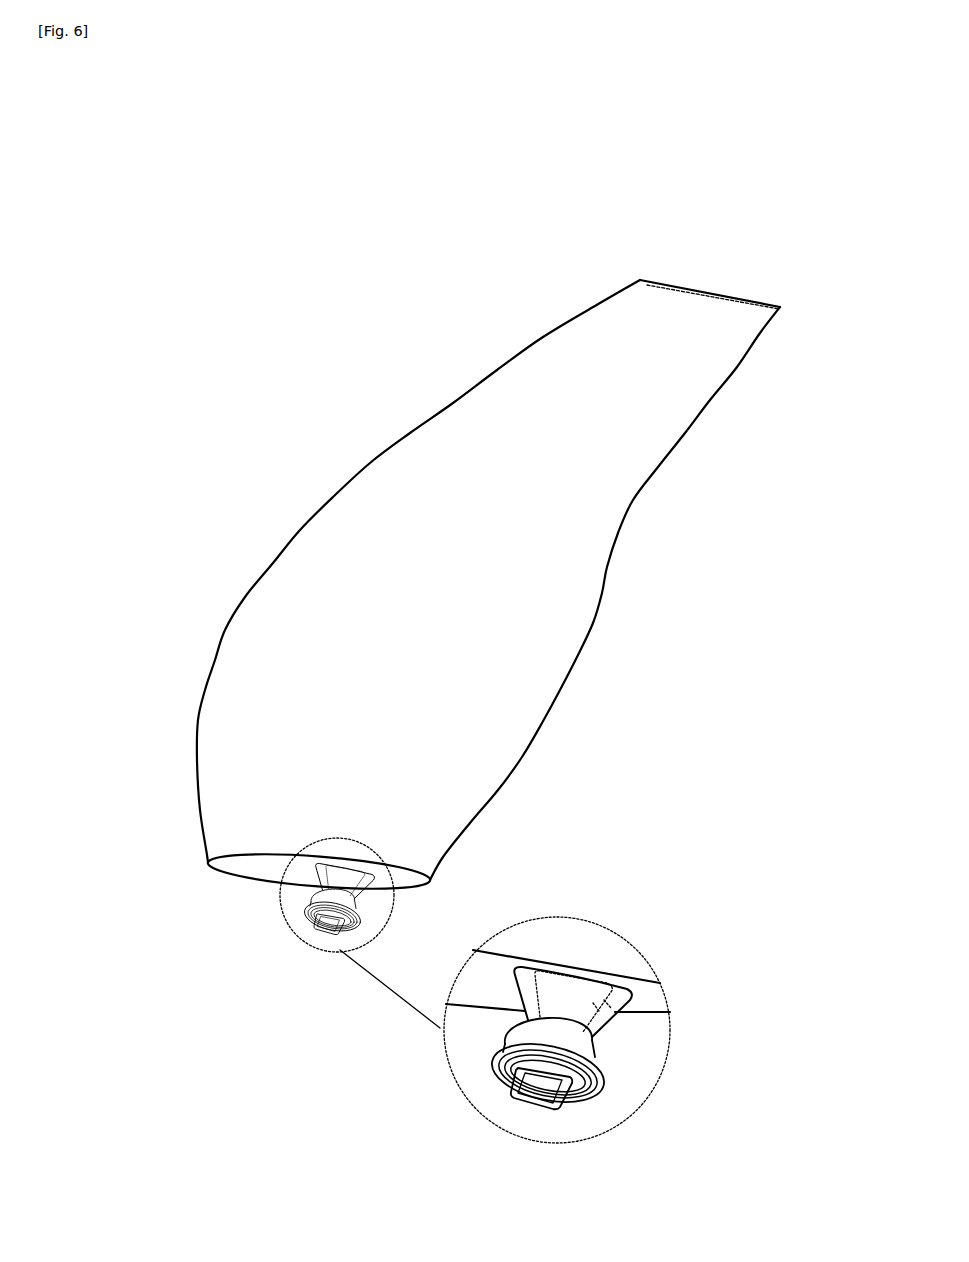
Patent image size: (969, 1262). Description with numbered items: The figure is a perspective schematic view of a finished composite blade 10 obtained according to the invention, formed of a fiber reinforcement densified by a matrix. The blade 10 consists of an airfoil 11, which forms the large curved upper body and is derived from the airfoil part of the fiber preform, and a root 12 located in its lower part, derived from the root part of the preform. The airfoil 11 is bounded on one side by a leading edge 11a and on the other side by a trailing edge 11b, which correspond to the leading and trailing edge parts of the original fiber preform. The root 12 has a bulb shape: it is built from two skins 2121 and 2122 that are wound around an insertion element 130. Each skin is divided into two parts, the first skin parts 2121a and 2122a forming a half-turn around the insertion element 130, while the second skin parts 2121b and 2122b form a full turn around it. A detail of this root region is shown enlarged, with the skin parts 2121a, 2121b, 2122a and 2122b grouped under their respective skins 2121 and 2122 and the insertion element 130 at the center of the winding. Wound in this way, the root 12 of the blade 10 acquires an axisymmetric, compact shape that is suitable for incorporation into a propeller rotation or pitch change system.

The blade 10 is at (353, 362).
The airfoil 11 is at (532, 550).
The leading edge 11a is at (322, 512).
The trailing edge 11b is at (605, 588).
The root 12 is at (277, 945).
The first skin 2121 is at (360, 900).
The first skin part of the first skin 2121a is at (600, 1025).
The second skin part of the first skin 2121b is at (597, 1040).
The second skin 2122 is at (295, 895).
The first skin part of the second skin 2122a is at (522, 990).
The second skin part of the second skin 2122b is at (505, 1036).
The insertion element 130 is at (328, 928).